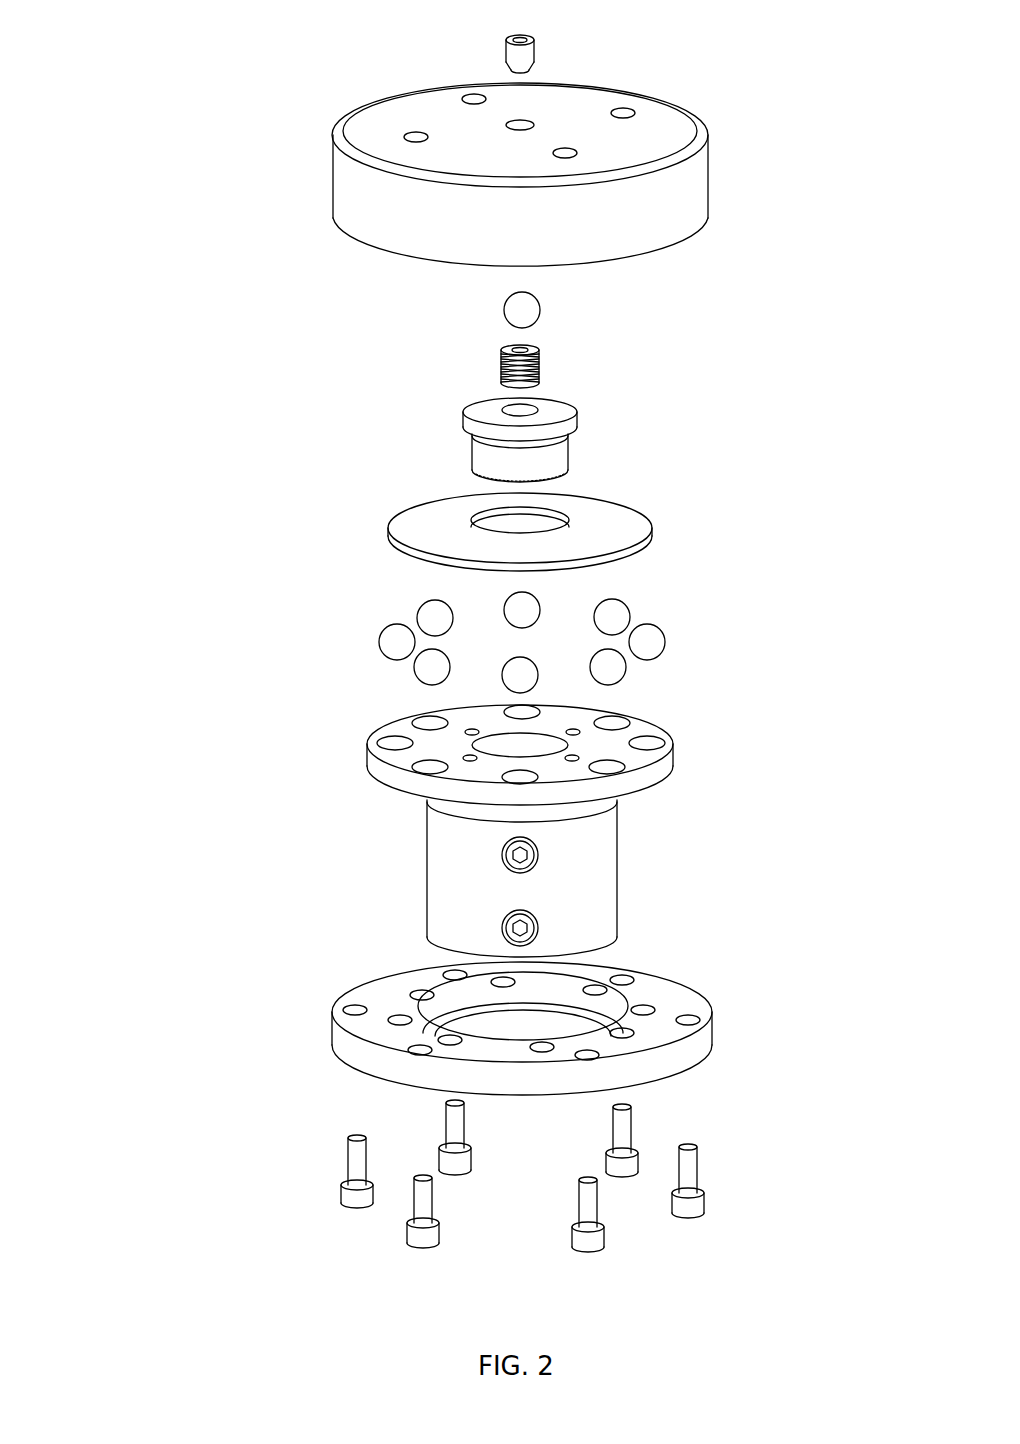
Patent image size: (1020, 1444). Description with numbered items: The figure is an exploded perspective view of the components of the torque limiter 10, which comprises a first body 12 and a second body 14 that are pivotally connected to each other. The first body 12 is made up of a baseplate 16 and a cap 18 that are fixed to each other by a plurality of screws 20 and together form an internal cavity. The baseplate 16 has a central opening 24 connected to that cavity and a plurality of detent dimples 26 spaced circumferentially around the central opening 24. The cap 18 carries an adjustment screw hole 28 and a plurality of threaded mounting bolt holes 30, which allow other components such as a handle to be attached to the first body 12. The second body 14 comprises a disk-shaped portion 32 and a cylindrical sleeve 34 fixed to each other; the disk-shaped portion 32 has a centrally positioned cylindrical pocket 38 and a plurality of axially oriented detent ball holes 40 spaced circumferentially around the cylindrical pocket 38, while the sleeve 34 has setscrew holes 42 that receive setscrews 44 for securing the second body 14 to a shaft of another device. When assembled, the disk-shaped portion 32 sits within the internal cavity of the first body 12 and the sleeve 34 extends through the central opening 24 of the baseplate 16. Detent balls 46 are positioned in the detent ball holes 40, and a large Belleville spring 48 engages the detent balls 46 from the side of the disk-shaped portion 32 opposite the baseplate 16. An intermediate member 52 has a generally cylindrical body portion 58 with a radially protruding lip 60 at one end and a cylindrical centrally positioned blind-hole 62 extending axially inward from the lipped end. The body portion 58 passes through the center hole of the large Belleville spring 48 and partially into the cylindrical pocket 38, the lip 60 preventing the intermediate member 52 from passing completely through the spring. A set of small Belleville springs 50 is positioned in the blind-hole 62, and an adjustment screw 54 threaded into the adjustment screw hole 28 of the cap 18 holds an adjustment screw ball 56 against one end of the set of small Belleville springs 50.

The torque limiter 10 is at (143, 83).
The first body 12 is at (581, 174).
The cap 18 is at (673, 205).
The second body 14 is at (533, 878).
The baseplate 16 is at (522, 1045).
The screws 20 is at (355, 1197).
The central opening 24 is at (523, 1023).
The detent dimples 26 is at (500, 982).
The adjustment screw hole 28 is at (523, 121).
The threaded mounting bolt holes 30 is at (472, 95).
The disk-shaped portion 32 is at (511, 746).
The cylindrical sleeve 34 is at (605, 848).
The cylindrical pocket 38 is at (519, 740).
The detent ball holes 40 is at (396, 741).
The setscrew holes 42 is at (520, 891).
The setscrews 44 is at (533, 891).
The detent balls 46 is at (430, 620).
The large Belleville spring 48 is at (608, 530).
The small Belleville springs 50 is at (546, 351).
The intermediate member 52 is at (517, 431).
The adjustment screw 54 is at (538, 58).
The adjustment screw ball 56 is at (515, 312).
The body portion 58 is at (555, 458).
The lip 60 is at (572, 432).
The blind-hole 62 is at (518, 407).